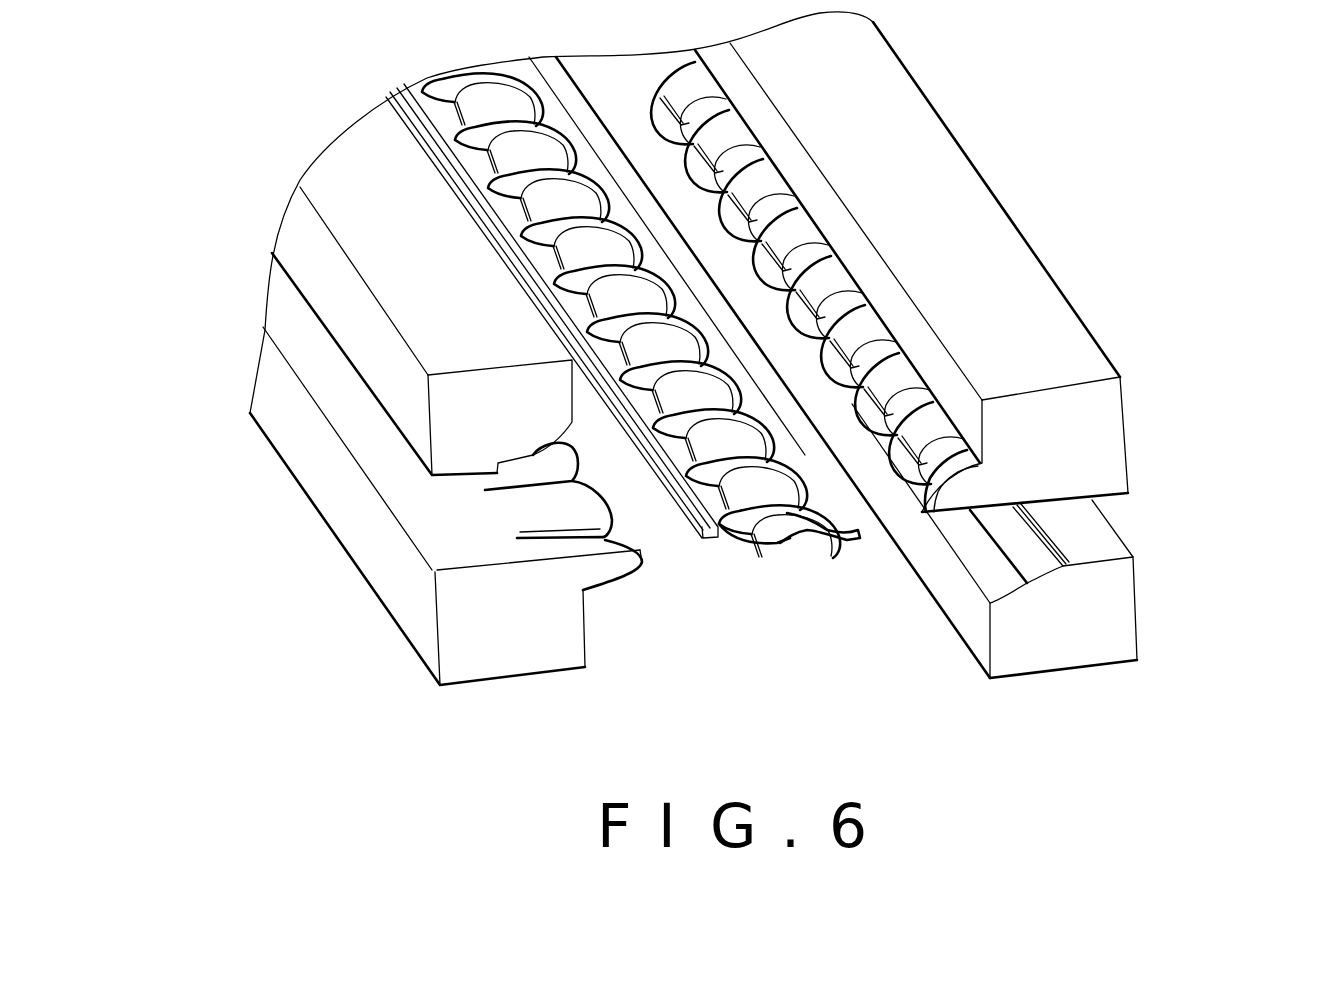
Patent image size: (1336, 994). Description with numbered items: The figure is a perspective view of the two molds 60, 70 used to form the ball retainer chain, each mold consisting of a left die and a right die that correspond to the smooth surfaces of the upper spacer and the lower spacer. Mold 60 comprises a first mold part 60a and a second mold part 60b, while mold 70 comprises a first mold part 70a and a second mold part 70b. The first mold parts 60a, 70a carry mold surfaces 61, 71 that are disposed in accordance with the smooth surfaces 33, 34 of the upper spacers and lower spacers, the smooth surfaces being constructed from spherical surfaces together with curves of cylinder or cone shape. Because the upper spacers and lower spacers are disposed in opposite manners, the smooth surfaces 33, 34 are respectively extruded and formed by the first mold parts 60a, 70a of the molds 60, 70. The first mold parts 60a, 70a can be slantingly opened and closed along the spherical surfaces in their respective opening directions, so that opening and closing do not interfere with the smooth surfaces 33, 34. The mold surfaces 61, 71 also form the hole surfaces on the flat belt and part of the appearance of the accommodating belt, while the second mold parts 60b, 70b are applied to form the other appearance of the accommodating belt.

The smooth surface 33 is at (779, 508).
The smooth surface 34 is at (772, 528).
The mold 60 is at (1240, 525).
The first mold part 60a is at (1088, 478).
The second mold part 60b is at (1115, 608).
The mold surface 61 is at (938, 482).
The mold 70 is at (172, 328).
The first mold part 70a is at (442, 506).
The second mold part 70b is at (457, 442).
The mold surface 71 is at (606, 537).